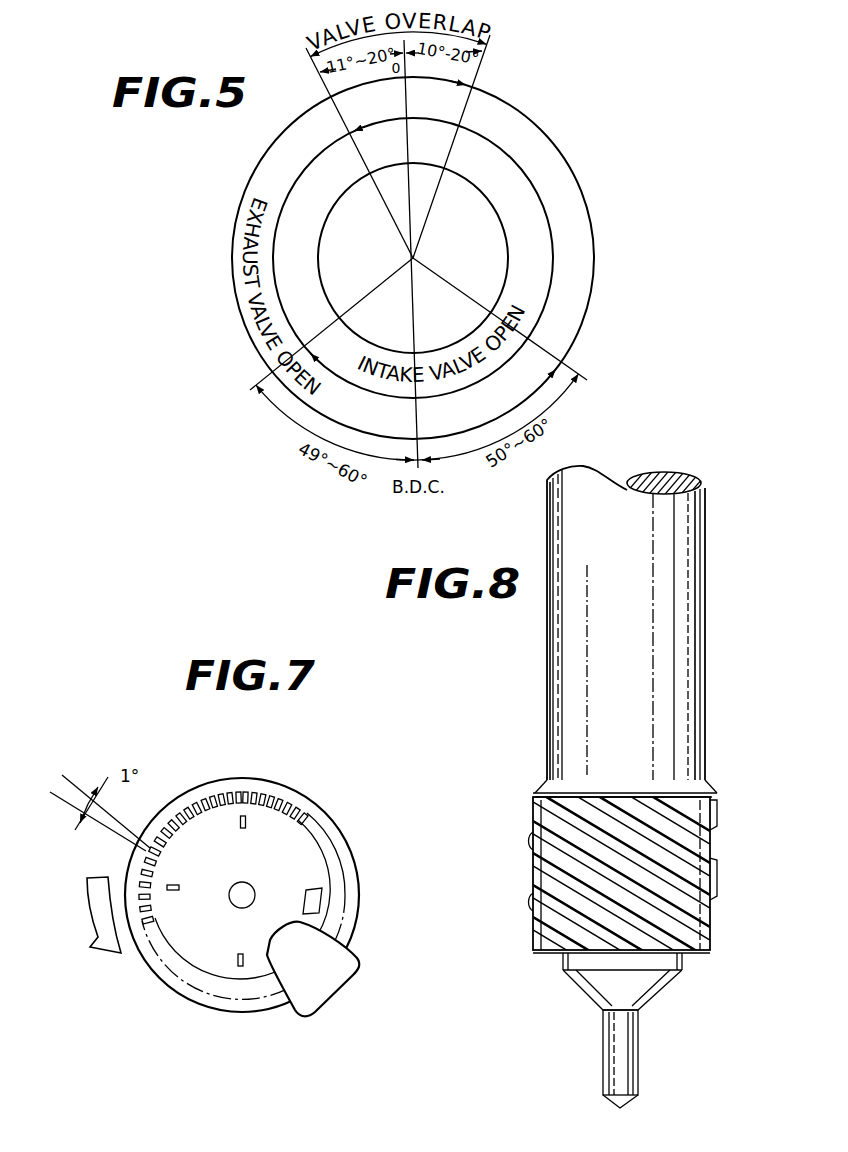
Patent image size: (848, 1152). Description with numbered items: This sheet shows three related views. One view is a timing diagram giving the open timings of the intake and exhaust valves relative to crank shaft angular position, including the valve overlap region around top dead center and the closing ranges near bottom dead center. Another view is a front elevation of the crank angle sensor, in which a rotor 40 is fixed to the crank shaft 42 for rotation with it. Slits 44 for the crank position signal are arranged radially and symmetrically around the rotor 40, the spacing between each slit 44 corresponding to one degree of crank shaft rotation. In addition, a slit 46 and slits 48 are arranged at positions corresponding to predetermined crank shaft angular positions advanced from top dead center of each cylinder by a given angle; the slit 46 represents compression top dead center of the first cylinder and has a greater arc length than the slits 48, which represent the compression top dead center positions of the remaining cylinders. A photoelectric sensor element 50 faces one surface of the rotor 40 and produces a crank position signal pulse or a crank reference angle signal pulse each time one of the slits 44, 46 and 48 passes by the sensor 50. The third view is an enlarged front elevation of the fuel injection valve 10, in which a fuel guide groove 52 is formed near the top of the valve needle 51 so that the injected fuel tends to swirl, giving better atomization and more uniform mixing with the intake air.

In FIG. 8, the fuel injection valve 10 is at (666, 786).
In FIG. 8, the valve needle 51 is at (696, 612).
In FIG. 8, the fuel guide groove 52 is at (717, 877).
In FIG. 7, the rotor 40 is at (333, 820).
In FIG. 7, the crank shaft 42 is at (251, 886).
In FIG. 7, the slits 44 is at (212, 791).
In FIG. 7, the slit 46 is at (318, 902).
In FIG. 7, the slits 48 is at (240, 822).
In FIG. 7, the photoelectric sensor element 50 is at (348, 968).